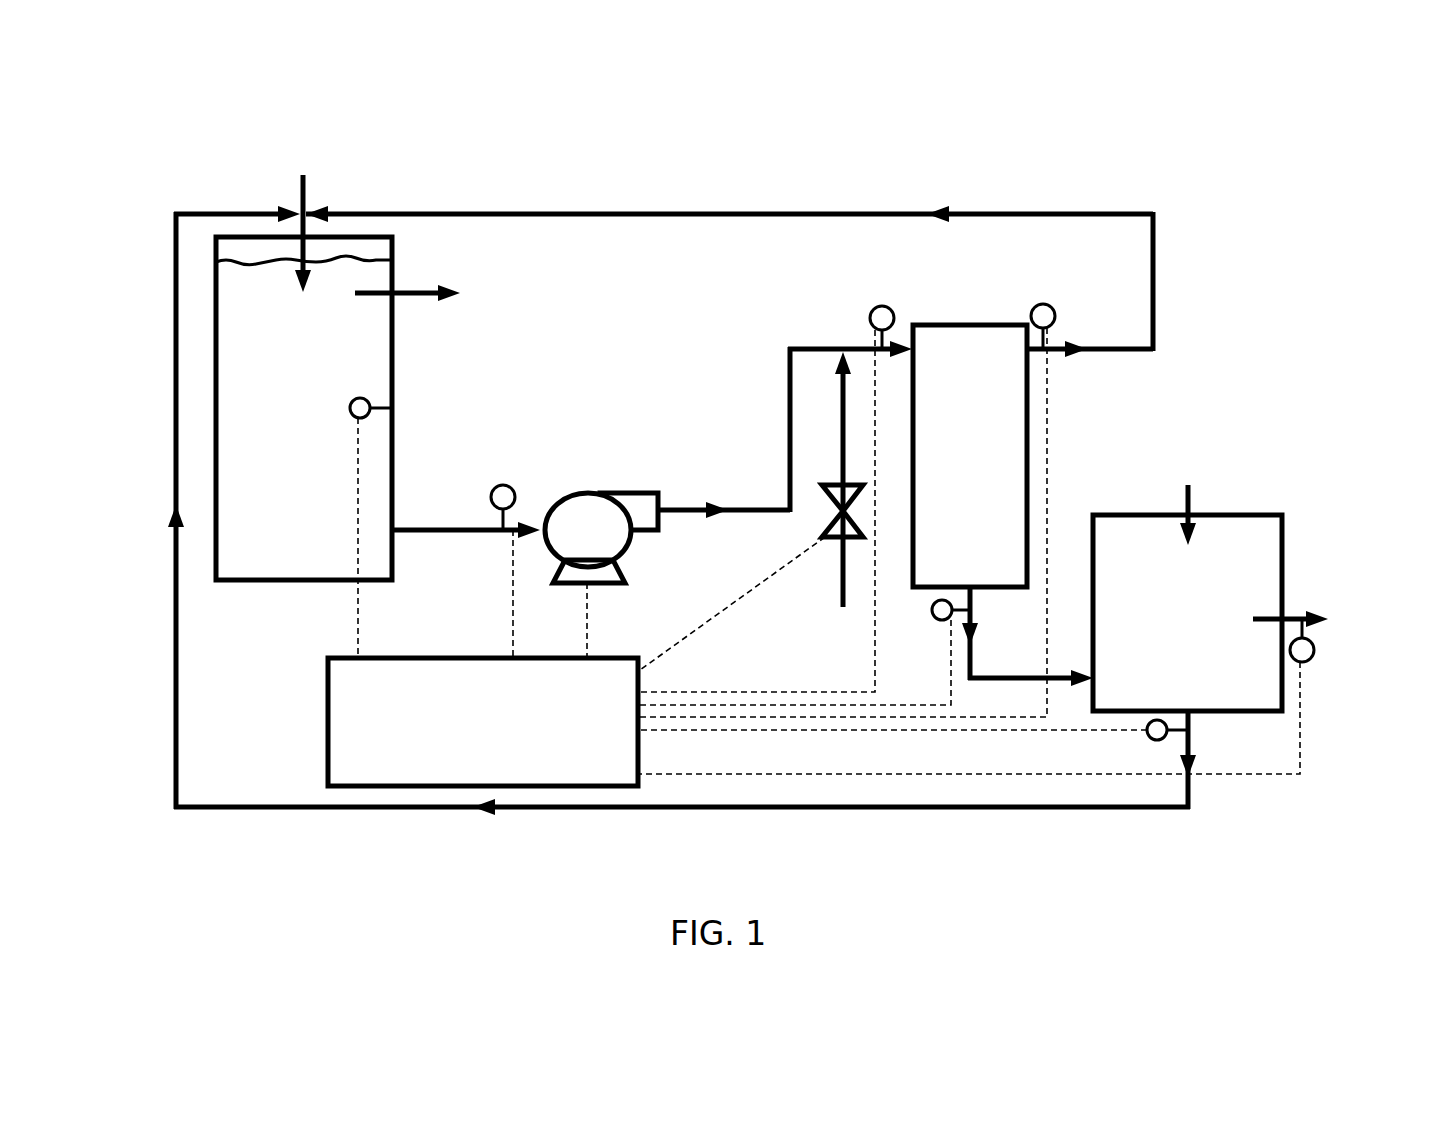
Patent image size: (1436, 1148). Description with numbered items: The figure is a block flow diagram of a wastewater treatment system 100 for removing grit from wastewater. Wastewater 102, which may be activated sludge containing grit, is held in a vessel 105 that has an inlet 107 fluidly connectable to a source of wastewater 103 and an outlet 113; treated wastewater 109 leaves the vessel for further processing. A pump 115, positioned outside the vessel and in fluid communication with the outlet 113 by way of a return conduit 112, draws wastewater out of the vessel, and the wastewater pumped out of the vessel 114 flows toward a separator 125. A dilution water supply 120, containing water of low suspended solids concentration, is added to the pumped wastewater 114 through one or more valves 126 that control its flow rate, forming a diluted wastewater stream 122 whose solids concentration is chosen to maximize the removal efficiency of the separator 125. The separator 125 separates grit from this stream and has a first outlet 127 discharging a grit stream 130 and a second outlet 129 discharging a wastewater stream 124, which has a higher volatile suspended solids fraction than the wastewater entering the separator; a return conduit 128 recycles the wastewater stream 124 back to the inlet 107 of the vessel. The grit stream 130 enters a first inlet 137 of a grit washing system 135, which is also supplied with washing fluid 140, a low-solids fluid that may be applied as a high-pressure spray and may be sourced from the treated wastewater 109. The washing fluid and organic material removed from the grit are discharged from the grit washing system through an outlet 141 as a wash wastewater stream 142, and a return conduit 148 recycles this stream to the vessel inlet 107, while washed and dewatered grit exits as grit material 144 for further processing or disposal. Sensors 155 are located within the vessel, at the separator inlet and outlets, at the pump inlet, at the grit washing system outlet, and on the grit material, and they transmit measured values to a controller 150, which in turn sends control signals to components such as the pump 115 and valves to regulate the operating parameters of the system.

The wastewater treatment system 100 is at (260, 111).
The wastewater 102 is at (357, 363).
The source of wastewater 103 is at (305, 215).
The vessel 105 is at (333, 427).
The inlet 107 is at (298, 242).
The treated wastewater 109 is at (440, 293).
The return conduit 112 is at (466, 517).
The outlet 113 is at (388, 528).
The wastewater pumped out of the vessel 114 is at (724, 432).
The pump 115 is at (580, 515).
The dilution water supply 120 is at (843, 500).
The diluted wastewater stream 122 is at (862, 345).
The wastewater stream 124 is at (835, 289).
The separator 125 is at (1000, 475).
The valves 126 is at (830, 513).
The first outlet 127 is at (972, 580).
The return conduit 128 is at (692, 216).
The second outlet 129 is at (1022, 350).
The grit stream 130 is at (1030, 664).
The grit washing system 135 is at (1220, 634).
The first inlet 137 is at (1100, 678).
The washing fluid 140 is at (1186, 497).
The outlet 141 is at (1193, 700).
The wash wastewater stream 142 is at (716, 763).
The grit material 144 is at (1324, 615).
The return conduit 148 is at (826, 808).
The controller 150 is at (483, 722).
The sensors 155 is at (372, 403).